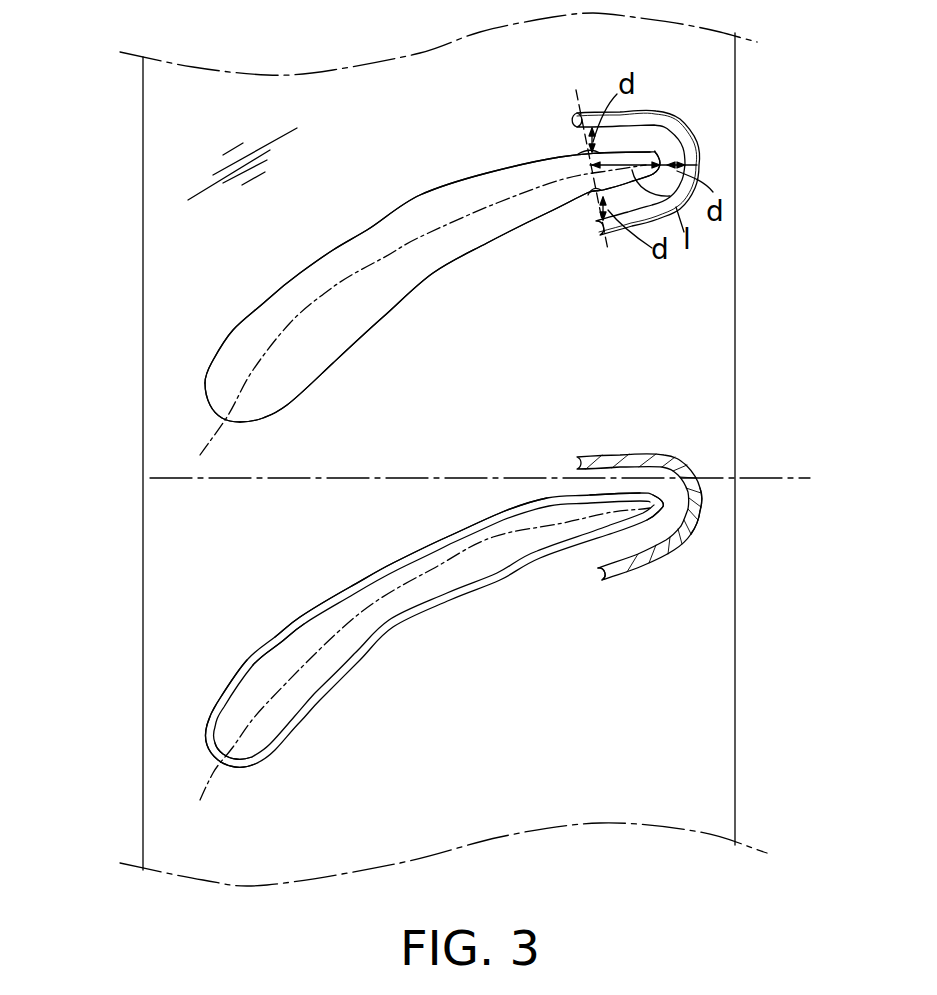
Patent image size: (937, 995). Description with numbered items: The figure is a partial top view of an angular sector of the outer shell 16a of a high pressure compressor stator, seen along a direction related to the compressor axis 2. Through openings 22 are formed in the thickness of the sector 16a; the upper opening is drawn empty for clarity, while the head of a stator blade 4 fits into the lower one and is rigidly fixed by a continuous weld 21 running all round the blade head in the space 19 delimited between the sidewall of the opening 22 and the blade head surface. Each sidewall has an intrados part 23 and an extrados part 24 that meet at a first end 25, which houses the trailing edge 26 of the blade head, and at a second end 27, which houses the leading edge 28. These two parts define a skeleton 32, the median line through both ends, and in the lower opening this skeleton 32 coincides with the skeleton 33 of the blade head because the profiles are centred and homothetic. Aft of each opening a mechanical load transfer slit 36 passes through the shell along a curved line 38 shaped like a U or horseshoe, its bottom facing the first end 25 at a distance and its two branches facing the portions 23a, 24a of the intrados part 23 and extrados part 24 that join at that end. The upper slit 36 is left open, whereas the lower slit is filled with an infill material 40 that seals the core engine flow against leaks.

The compressor axis 2 is at (800, 477).
The stator blade 4 is at (394, 620).
The angular sector of the outer shell 16a is at (391, 72).
The space 19 is at (272, 634).
The continuous weld 21 is at (231, 677).
The opening 22 is at (285, 291).
The intrados part 23 is at (378, 304).
The portion of the intrados part 23a is at (590, 194).
The extrados part 24 is at (358, 227).
The portion of the extrados part 24a is at (578, 154).
The first end 25 is at (655, 160).
The trailing edge 26 is at (642, 491).
The second end 27 is at (248, 421).
The leading edge 28 is at (236, 745).
The skeleton 32 is at (203, 450).
The skeleton of the blade head 33 is at (200, 787).
The mechanical load transfer slit 36 is at (660, 110).
The curved line 38 is at (560, 122).
The infill material 40 is at (701, 525).